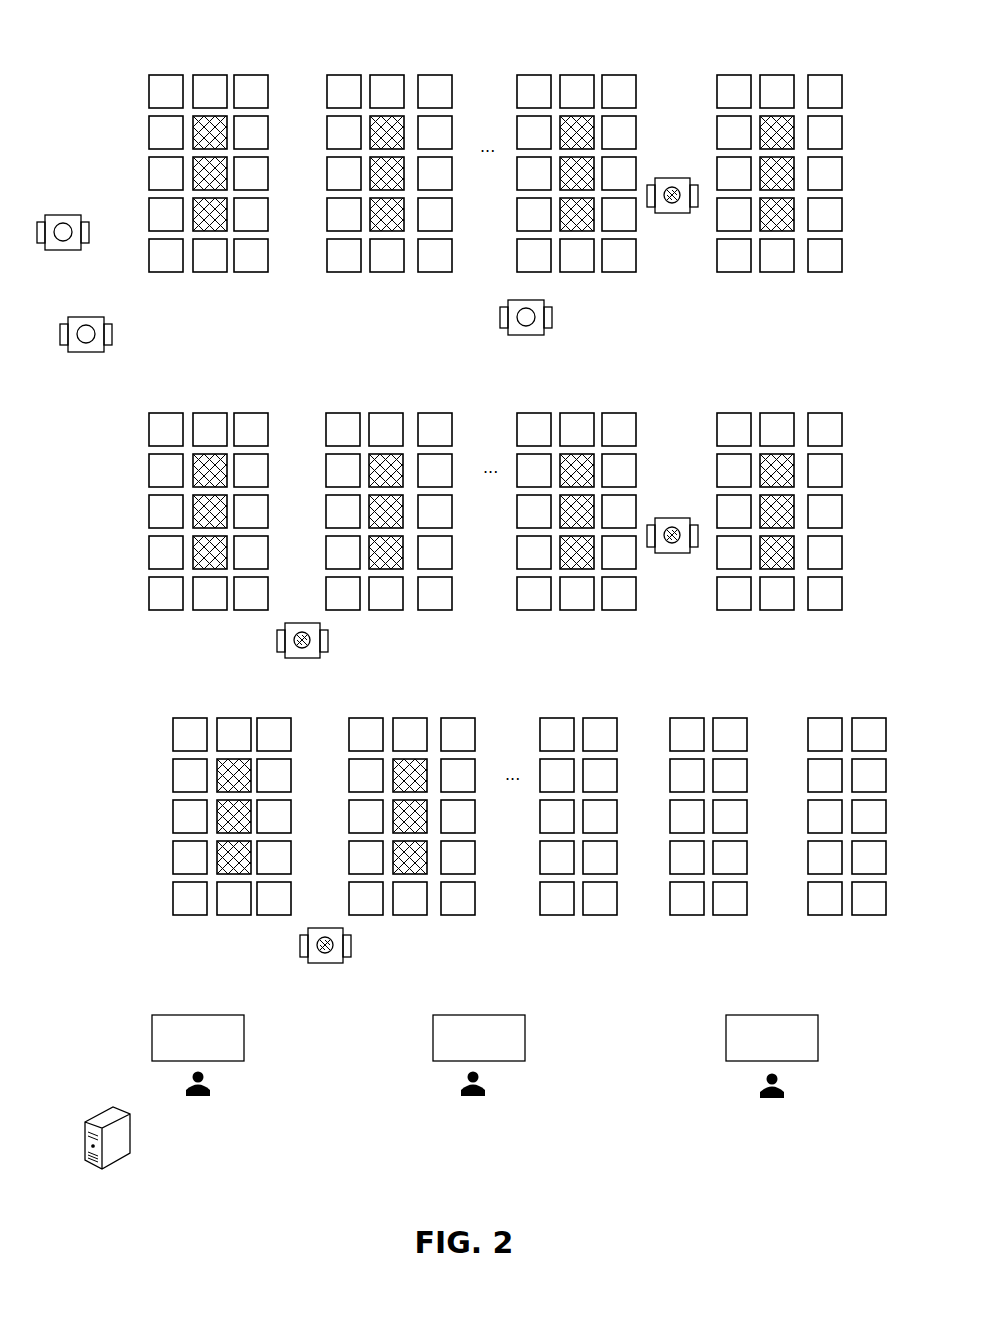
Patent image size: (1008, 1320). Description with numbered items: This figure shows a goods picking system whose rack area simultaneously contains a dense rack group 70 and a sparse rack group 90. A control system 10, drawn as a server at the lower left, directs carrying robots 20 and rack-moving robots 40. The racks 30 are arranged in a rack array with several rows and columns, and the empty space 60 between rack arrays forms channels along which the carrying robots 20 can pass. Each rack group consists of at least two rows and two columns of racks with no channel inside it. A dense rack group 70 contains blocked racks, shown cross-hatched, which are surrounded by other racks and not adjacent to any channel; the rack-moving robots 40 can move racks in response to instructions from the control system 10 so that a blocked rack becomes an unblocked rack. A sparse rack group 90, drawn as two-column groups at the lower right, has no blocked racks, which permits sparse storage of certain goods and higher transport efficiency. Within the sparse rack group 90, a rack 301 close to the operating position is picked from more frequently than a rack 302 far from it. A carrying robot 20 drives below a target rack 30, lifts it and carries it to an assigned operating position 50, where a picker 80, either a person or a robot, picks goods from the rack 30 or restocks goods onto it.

The control system 10 is at (133, 1127).
The carrying robot 20 is at (90, 232).
The rack 30 is at (488, 485).
The rack-moving robot 40 is at (326, 927).
The operating position 50 is at (217, 1013).
The empty space 60 is at (495, 173).
The dense rack group 70 is at (140, 513).
The picker 80 is at (211, 1088).
The sparse rack group 90 is at (687, 834).
The rack close to the operating position 301 is at (670, 915).
The rack far from the operating position 302 is at (670, 782).